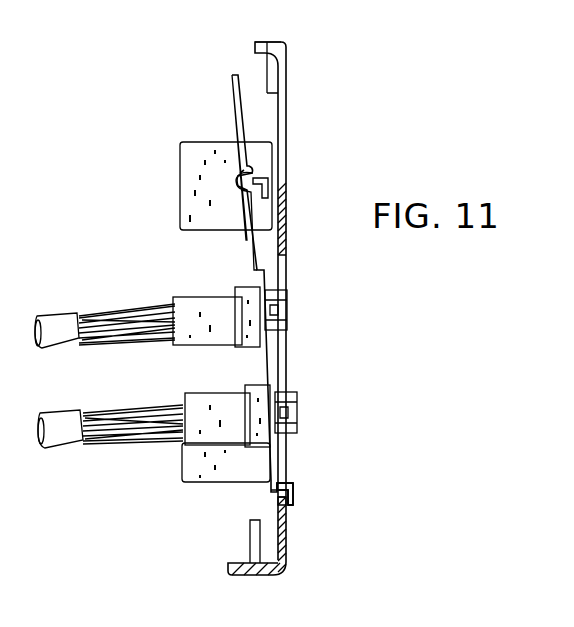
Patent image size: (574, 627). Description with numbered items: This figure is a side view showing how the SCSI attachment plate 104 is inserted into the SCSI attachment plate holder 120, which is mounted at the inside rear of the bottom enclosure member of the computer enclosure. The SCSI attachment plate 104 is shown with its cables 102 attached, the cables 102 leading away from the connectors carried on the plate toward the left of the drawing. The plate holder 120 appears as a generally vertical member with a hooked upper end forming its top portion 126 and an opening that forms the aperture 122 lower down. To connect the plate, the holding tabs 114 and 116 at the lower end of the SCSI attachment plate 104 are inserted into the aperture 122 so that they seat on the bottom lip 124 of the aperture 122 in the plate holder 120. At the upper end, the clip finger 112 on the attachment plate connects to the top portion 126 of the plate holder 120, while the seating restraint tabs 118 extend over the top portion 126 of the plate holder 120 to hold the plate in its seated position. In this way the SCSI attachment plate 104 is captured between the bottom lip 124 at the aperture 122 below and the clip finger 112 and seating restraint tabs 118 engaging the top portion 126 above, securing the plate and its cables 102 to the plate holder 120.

The cables 102 is at (62, 313).
The SCSI attachment plate 104 is at (230, 95).
The clip finger 112 is at (266, 186).
The holding tab 114 is at (296, 490).
The holding tab 116 is at (285, 494).
The seating restraint tabs 118 is at (250, 172).
The SCSI attachment plate holder 120 is at (258, 43).
The aperture 122 is at (283, 358).
The bottom lip 124 is at (276, 508).
The top portion 126 is at (287, 215).